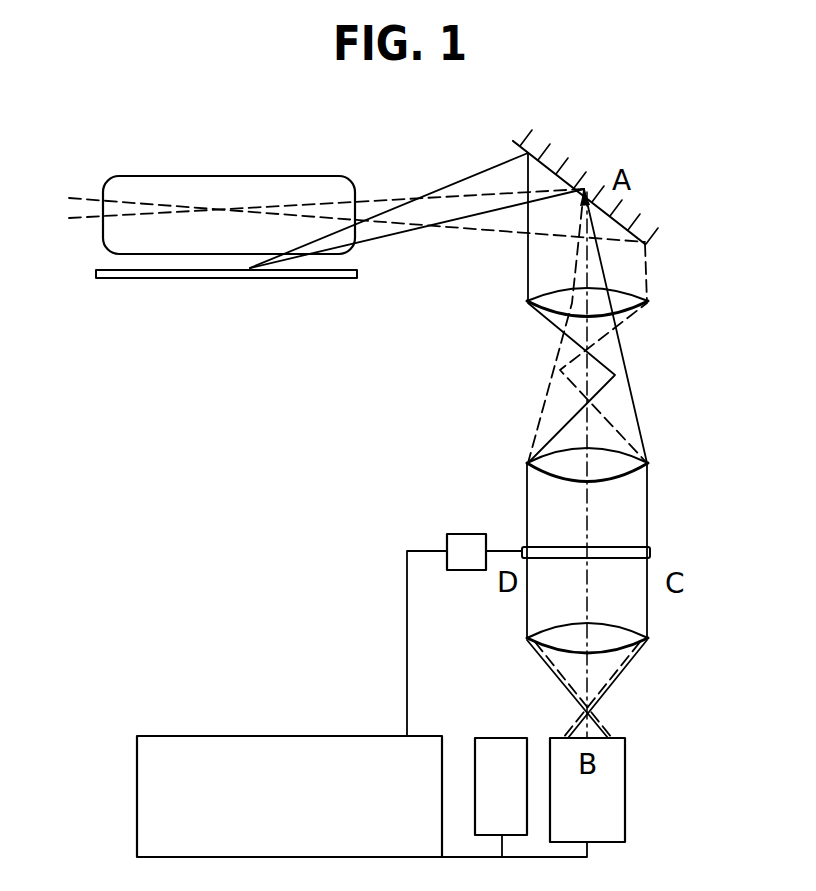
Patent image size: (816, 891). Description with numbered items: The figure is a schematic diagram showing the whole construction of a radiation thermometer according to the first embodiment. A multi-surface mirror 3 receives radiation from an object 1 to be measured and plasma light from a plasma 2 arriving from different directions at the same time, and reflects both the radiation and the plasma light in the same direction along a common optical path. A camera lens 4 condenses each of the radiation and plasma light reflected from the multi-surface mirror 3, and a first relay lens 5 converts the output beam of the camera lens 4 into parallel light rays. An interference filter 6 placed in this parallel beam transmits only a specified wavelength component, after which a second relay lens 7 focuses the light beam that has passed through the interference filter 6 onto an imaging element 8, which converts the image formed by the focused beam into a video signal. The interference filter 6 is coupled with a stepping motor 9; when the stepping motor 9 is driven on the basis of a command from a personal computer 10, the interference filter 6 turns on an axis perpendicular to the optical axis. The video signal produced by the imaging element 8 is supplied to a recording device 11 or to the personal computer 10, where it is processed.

The object to be measured 1 is at (190, 280).
The plasma 2 is at (234, 176).
The multi-surface mirror 3 is at (572, 162).
The camera lens 4 is at (648, 305).
The first relay lens 5 is at (648, 468).
The interference filter 6 is at (650, 551).
The second relay lens 7 is at (648, 630).
The imaging element 8 is at (627, 758).
The stepping motor 9 is at (463, 534).
The personal computer 10 is at (303, 736).
The recording device 11 is at (502, 738).